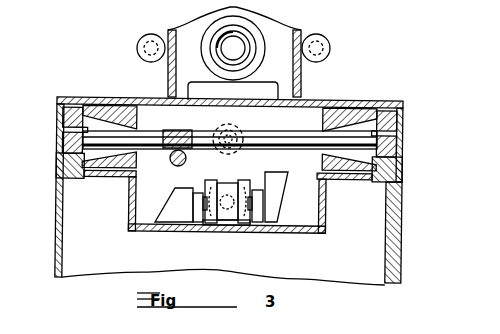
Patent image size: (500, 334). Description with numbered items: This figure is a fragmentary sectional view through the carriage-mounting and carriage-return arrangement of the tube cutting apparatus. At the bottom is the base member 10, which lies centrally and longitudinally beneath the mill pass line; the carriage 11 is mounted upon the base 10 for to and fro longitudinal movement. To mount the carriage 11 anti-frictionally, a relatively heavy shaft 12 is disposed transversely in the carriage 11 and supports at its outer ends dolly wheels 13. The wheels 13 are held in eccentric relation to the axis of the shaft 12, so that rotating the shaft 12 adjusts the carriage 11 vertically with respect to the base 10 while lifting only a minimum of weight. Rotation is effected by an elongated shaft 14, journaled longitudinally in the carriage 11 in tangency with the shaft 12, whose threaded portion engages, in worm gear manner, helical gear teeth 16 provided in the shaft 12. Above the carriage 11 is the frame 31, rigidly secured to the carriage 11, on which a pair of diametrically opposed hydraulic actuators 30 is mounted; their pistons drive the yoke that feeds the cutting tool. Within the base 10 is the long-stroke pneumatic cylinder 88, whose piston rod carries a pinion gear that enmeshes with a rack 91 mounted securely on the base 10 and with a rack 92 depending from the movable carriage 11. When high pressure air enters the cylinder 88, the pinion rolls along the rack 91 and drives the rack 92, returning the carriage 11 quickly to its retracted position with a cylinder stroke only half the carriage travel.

The base member 10 is at (403, 221).
The carriage 11 is at (358, 100).
The shafts 12 is at (265, 153).
The dolly wheels 13 is at (58, 105).
The elongated shaft 14 is at (187, 158).
The helical gear teeth 16 is at (178, 124).
The hydraulic actuators 30 is at (137, 47).
The frame 31 is at (301, 98).
The pneumatic cylinder 88 is at (213, 182).
The rack 91 is at (170, 203).
The rack 92 is at (279, 193).